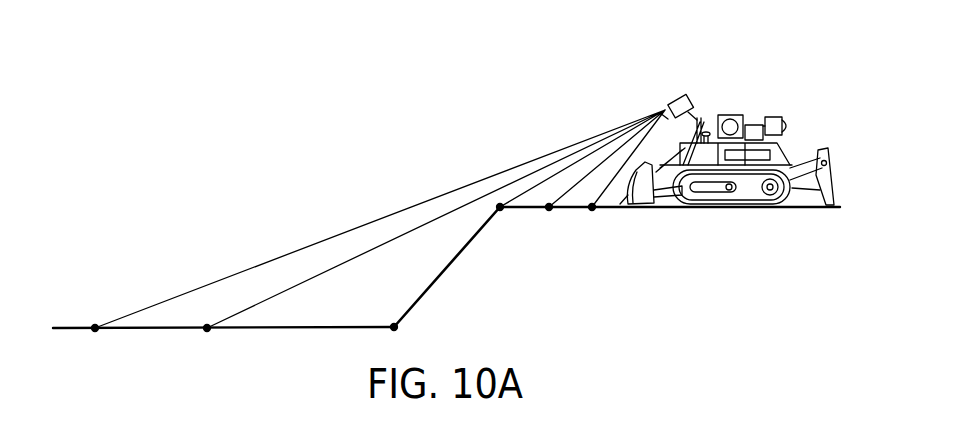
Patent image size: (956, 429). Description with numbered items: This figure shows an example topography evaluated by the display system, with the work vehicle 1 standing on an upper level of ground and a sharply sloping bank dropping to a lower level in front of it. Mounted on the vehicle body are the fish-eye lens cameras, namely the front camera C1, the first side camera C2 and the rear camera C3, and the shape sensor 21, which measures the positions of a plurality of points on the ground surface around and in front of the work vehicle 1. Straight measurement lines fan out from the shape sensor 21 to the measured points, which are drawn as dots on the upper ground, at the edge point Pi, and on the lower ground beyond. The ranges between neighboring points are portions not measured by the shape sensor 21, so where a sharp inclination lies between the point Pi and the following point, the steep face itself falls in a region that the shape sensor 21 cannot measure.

The work vehicle 1 is at (769, 97).
The shape sensor 21 is at (672, 96).
The front camera C1 is at (650, 120).
The first side camera C2 is at (720, 114).
The rear camera C3 is at (788, 127).
The point Pi is at (498, 205).